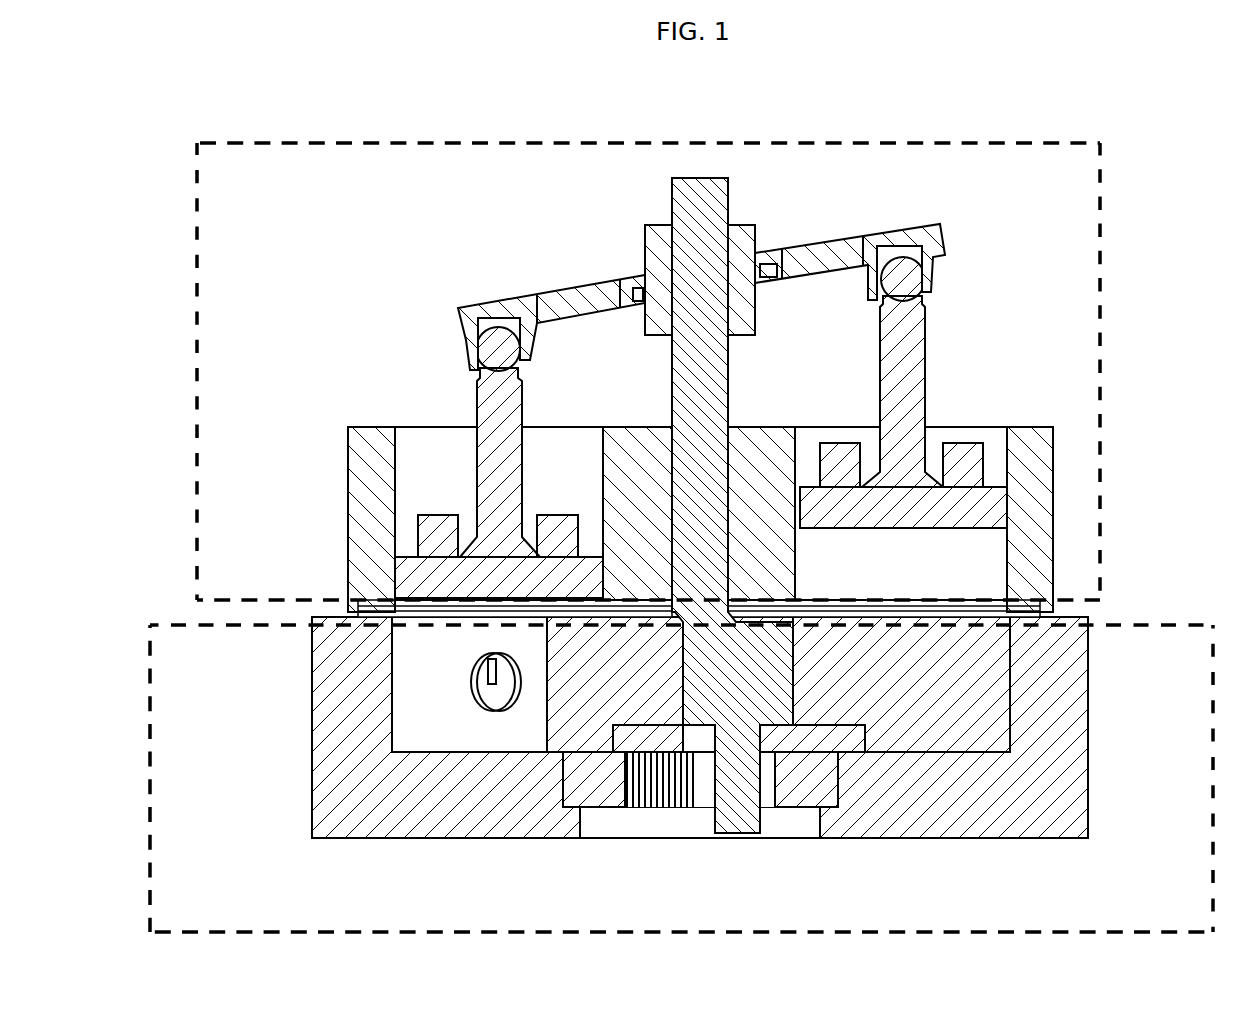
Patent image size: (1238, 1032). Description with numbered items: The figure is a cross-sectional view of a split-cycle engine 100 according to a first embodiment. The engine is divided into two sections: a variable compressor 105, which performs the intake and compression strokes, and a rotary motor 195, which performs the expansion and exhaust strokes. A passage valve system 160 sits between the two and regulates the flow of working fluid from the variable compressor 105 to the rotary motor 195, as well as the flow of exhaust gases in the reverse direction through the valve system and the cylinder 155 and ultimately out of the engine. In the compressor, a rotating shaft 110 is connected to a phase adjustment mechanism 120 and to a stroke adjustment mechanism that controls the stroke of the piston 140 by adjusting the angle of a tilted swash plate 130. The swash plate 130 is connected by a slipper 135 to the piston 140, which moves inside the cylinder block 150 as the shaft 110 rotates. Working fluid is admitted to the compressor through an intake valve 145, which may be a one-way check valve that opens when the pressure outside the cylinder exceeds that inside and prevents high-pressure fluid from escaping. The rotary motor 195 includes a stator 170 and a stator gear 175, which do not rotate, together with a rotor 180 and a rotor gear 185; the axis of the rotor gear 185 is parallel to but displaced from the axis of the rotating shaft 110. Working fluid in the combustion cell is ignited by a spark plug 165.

The split-cycle engine 100 is at (456, 78).
The variable compressor 105 is at (193, 155).
The rotating shaft 110 is at (732, 186).
The phase adjustment mechanism 120 is at (645, 230).
The tilted swash plate 130 is at (907, 226).
The slipper 135 is at (463, 350).
The piston 140 is at (475, 407).
The intake valve 145 is at (970, 443).
The cylinder block 150 is at (348, 473).
The cylinder 155 is at (437, 447).
The passage valve system 160 is at (975, 614).
The spark plug 165 is at (472, 690).
The stator 170 is at (1058, 690).
The stator gear 175 is at (838, 785).
The rotor 180 is at (547, 687).
The rotor gear 185 is at (650, 728).
The rotary motor 195 is at (150, 638).